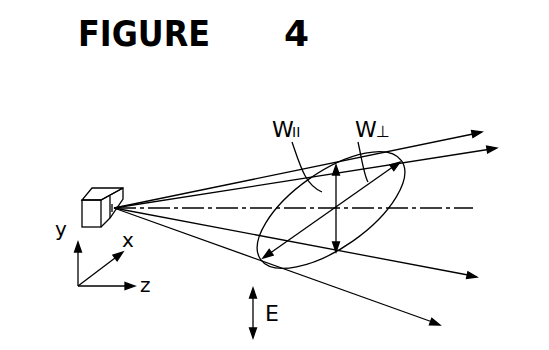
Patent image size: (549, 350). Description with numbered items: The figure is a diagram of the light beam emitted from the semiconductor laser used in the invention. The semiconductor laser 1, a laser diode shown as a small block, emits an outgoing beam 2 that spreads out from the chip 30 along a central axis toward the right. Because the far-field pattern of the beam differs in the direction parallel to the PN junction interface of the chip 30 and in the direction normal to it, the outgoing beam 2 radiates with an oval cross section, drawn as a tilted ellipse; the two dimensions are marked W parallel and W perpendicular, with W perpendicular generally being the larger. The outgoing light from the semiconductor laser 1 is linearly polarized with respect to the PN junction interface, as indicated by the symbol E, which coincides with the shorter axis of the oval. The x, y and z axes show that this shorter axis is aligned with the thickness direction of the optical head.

The semiconductor laser 1 is at (83, 200).
The chip 30 is at (124, 198).
The outgoing beam 2 is at (212, 246).